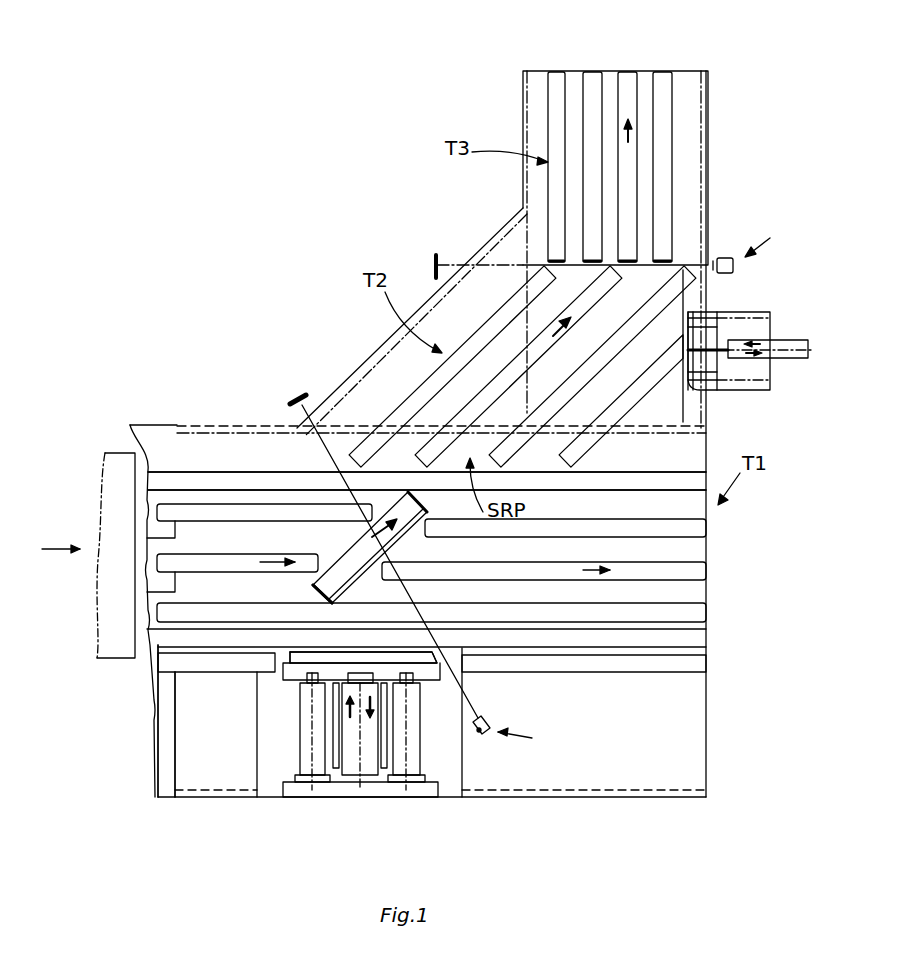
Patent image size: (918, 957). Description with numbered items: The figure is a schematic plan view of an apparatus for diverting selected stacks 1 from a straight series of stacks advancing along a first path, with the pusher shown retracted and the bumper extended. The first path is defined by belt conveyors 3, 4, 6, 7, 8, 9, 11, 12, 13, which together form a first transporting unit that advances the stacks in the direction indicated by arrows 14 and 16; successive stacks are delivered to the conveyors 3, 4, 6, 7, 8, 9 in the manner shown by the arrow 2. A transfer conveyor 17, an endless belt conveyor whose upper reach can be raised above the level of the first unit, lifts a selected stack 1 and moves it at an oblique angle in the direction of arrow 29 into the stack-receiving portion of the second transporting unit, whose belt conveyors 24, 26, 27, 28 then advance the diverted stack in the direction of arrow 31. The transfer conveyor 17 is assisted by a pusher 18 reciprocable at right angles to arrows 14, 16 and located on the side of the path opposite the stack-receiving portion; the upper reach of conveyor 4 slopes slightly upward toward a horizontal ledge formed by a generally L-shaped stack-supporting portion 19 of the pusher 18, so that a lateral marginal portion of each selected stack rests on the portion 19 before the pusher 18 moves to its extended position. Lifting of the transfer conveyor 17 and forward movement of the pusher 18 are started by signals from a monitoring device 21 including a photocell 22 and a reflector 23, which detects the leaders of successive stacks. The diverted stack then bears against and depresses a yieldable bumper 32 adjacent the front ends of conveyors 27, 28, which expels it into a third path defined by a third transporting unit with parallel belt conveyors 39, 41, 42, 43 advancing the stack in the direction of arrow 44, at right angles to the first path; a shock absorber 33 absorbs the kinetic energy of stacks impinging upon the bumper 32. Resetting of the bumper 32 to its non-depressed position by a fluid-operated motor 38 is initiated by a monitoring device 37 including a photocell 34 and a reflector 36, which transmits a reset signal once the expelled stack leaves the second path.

The stacks 1 is at (106, 472).
The arrow 2 is at (61, 538).
The belt conveyor 3 is at (162, 640).
The belt conveyor 4 is at (178, 660).
The belt conveyor 6 is at (208, 613).
The belt conveyor 7 is at (215, 560).
The belt conveyor 8 is at (242, 513).
The belt conveyor 9 is at (273, 482).
The belt conveyor 11 is at (695, 529).
The belt conveyor 12 is at (697, 572).
The belt conveyor 13 is at (695, 665).
The arrow 14 is at (265, 562).
The arrow 16 is at (583, 570).
The transfer conveyor 17 is at (335, 572).
The pusher 18 is at (297, 674).
The stack-supporting portion 19 is at (293, 662).
The monitoring device 21 is at (530, 740).
The photocell 22 is at (480, 734).
The reflector 23 is at (300, 394).
The belt conveyor 24 is at (416, 387).
The belt conveyor 26 is at (472, 400).
The belt conveyor 27 is at (548, 395).
The belt conveyor 28 is at (610, 405).
The arrow 29 is at (370, 546).
The arrow 31 is at (547, 338).
The yieldable bumper 32 is at (695, 392).
The shock absorber 33 is at (763, 383).
The photocell 34 is at (728, 258).
The reflector 36 is at (421, 266).
The monitoring device 37 is at (773, 240).
The fluid-operated motor 38 is at (783, 343).
The belt conveyor 39 is at (558, 70).
The belt conveyor 41 is at (590, 73).
The belt conveyor 42 is at (627, 75).
The belt conveyor 43 is at (662, 75).
The arrow 44 is at (630, 147).